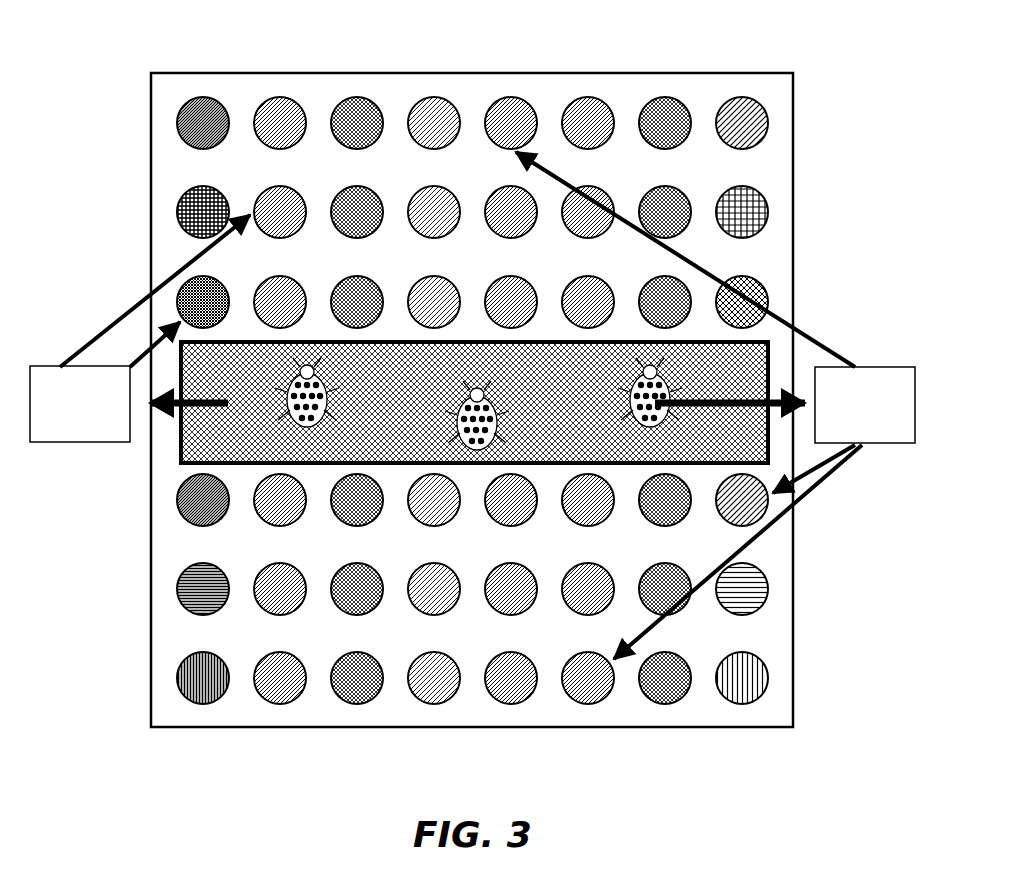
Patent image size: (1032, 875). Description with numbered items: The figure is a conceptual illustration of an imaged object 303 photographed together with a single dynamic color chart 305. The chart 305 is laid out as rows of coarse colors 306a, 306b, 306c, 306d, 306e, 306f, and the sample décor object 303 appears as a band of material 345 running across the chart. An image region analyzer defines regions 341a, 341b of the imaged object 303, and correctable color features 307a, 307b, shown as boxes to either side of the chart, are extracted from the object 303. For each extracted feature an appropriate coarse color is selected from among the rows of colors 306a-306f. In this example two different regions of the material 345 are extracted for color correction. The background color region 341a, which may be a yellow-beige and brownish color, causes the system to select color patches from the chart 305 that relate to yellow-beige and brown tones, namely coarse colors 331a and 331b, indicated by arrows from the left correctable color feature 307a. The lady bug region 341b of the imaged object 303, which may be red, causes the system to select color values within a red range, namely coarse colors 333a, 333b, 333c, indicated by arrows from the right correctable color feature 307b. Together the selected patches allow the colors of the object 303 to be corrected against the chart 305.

The imaged object 303 is at (382, 342).
The dynamic color chart 305 is at (574, 73).
The row of colors 306a is at (172, 124).
The row of colors 306b is at (172, 214).
The row of colors 306c is at (172, 304).
The row of colors 306d is at (172, 502).
The row of colors 306e is at (172, 591).
The row of colors 306f is at (172, 680).
The correctable color feature 307a is at (84, 442).
The correctable color feature 307b is at (895, 443).
The coarse color 331a is at (294, 192).
The coarse color 331b is at (218, 283).
The coarse color 333a is at (494, 146).
The coarse color 333b is at (724, 517).
The coarse color 333c is at (593, 641).
The background color region 341a is at (231, 410).
The lady bug region 341b is at (650, 428).
The material 345 is at (378, 440).